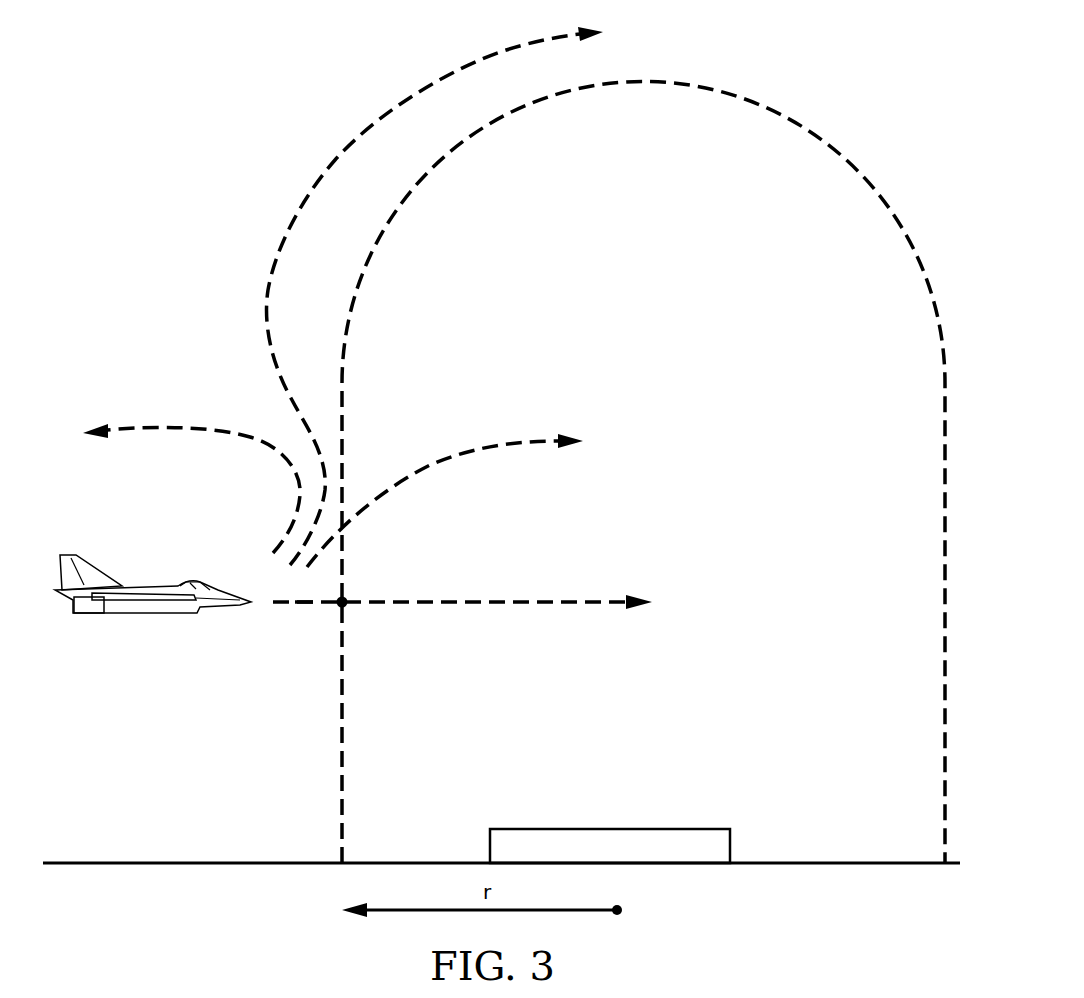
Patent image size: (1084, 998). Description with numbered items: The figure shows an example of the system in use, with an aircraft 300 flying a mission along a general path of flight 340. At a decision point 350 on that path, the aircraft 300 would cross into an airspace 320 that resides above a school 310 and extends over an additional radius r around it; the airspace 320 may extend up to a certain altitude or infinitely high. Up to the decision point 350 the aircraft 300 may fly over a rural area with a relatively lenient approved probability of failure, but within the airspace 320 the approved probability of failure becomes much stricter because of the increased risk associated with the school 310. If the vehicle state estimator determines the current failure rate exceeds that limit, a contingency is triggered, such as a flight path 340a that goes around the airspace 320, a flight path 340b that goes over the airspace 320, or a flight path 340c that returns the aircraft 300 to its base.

The aircraft 300 is at (148, 585).
The school 310 is at (609, 828).
The airspace 320 is at (644, 81).
The general path of flight 340 is at (545, 600).
The flight path 340a is at (522, 440).
The flight path 340b is at (351, 142).
The flight path 340c is at (168, 425).
The decision point 350 is at (301, 605).